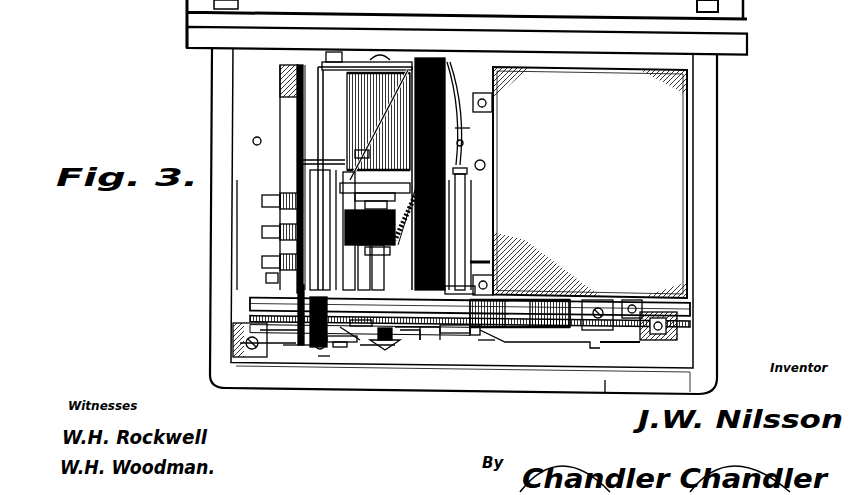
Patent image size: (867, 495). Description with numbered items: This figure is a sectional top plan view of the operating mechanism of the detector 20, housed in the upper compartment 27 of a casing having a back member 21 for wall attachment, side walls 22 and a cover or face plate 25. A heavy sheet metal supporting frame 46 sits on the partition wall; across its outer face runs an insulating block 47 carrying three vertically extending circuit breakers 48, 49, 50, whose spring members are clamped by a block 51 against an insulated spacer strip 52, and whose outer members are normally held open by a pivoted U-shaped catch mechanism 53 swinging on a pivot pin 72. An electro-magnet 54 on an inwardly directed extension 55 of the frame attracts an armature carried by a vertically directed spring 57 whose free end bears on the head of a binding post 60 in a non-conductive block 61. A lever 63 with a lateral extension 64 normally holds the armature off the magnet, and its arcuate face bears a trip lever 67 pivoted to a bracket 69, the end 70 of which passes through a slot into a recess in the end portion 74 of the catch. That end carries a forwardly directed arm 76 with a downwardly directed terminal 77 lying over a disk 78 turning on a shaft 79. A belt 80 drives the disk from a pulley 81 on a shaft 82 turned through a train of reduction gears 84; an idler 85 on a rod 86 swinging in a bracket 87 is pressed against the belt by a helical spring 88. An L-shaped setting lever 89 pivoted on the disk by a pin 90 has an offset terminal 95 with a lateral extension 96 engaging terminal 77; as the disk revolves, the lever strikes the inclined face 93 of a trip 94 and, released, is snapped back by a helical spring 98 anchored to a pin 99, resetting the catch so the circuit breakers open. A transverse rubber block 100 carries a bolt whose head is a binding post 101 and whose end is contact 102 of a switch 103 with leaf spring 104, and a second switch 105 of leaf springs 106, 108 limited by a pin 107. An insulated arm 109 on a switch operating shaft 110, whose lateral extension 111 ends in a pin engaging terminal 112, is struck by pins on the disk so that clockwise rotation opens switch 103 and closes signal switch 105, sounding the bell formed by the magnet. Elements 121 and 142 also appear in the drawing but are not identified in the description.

The detector 20 is at (258, 300).
The back member 21 is at (738, 50).
The side walls 22 is at (703, 245).
The cover or face plate 25 is at (440, 332).
The upper compartment 27 is at (490, 356).
The supporting frame 46 is at (315, 112).
The block 47 is at (305, 125).
The circuit breaker 48 is at (266, 265).
The circuit breaker 49 is at (262, 237).
The circuit breaker 50 is at (237, 208).
The block 51 is at (290, 147).
The insulated spacer strip 52 is at (298, 161).
The catch mechanism 53 is at (310, 172).
The electro-magnet 54 is at (357, 115).
The inwardly directed extension 55 is at (352, 70).
The spring 57 is at (375, 229).
The binding post 60 is at (370, 243).
The block 61 is at (365, 231).
The lever 63 is at (262, 200).
The lateral extension 64 is at (363, 157).
The trip lever 67 is at (233, 336).
The bracket 69 is at (292, 340).
The end of trip lever 70 is at (323, 340).
The pivot pin 72 is at (336, 168).
The end portion 74 is at (330, 342).
The forwardly directed arm 76 is at (347, 336).
The terminal 77 is at (338, 350).
The disk 78 is at (276, 330).
The shaft 79 is at (237, 347).
The belt 80 is at (450, 335).
The pulley 81 is at (540, 330).
The shaft 82 is at (535, 290).
The train of reduction gears 84 is at (490, 262).
The idler 85 is at (498, 330).
The rod 86 is at (576, 345).
The bracket 87 is at (660, 345).
The helical spring 88 is at (628, 300).
The setting lever 89 is at (398, 330).
The pin 90 is at (387, 338).
The inclined face 93 is at (316, 342).
The trip 94 is at (300, 372).
The offset terminal 95 is at (322, 358).
The lateral extension 96 is at (370, 350).
The helical spring 98 is at (405, 327).
The pin 99 is at (356, 340).
The block 100 is at (447, 56).
The binding post 101 is at (407, 211).
The contact 102 is at (485, 165).
The switch 103 is at (471, 235).
The leaf spring 104 is at (465, 200).
The second switch 105 is at (460, 118).
The leaf spring 106 is at (458, 95).
The pin 107 is at (463, 143).
The leaf spring 108 is at (470, 130).
The insulated arm 109 is at (467, 176).
The switch operating shaft 110 is at (471, 215).
The lateral extension 111 is at (482, 345).
The pin engaging terminal 112 is at (425, 332).
The plunger 121 is at (391, 268).
The wire 142 is at (405, 60).